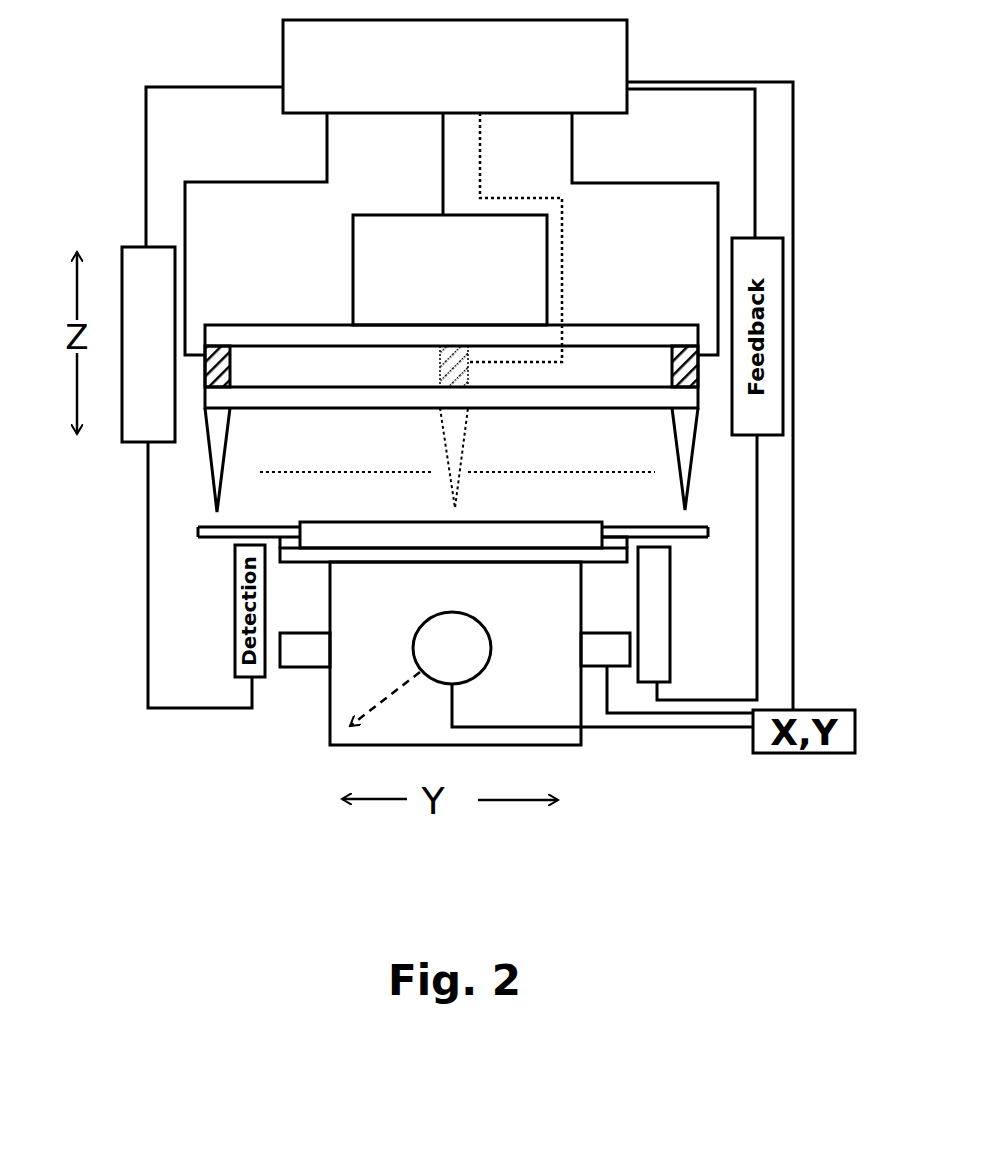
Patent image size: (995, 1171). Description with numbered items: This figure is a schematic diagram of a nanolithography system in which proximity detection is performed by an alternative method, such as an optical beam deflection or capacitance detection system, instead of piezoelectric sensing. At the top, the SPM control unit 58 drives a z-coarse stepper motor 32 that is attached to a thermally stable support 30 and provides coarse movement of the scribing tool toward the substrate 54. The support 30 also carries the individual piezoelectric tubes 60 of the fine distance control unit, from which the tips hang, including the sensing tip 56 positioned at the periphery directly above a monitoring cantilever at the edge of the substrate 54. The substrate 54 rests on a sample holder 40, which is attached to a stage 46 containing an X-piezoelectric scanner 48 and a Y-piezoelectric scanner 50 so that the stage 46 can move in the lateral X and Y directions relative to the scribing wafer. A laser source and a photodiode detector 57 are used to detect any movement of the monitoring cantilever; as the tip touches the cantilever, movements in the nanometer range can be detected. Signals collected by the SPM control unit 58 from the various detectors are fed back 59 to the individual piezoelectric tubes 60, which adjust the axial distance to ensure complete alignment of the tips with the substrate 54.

The SPM control unit 58 is at (617, 54).
The z-coarse stepper motor 32 is at (532, 256).
The thermally stable support 30 is at (640, 327).
The piezoelectric tubes 60 is at (232, 372).
The sensing tip 56 is at (220, 442).
The feedback 59 is at (137, 434).
The substrate 54 is at (552, 531).
The sample holder 40 is at (600, 557).
The photodiode detector 57 is at (670, 615).
The Y-piezoelectric scanner 50 is at (494, 650).
The X-piezoelectric scanner 48 is at (317, 655).
The stage 46 is at (420, 728).